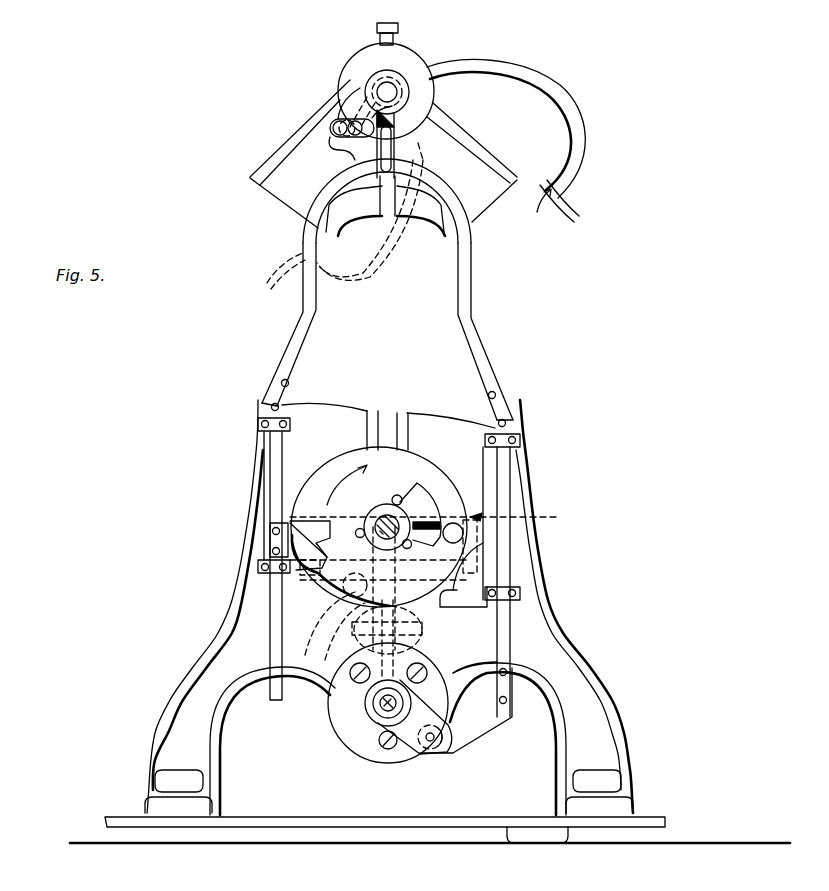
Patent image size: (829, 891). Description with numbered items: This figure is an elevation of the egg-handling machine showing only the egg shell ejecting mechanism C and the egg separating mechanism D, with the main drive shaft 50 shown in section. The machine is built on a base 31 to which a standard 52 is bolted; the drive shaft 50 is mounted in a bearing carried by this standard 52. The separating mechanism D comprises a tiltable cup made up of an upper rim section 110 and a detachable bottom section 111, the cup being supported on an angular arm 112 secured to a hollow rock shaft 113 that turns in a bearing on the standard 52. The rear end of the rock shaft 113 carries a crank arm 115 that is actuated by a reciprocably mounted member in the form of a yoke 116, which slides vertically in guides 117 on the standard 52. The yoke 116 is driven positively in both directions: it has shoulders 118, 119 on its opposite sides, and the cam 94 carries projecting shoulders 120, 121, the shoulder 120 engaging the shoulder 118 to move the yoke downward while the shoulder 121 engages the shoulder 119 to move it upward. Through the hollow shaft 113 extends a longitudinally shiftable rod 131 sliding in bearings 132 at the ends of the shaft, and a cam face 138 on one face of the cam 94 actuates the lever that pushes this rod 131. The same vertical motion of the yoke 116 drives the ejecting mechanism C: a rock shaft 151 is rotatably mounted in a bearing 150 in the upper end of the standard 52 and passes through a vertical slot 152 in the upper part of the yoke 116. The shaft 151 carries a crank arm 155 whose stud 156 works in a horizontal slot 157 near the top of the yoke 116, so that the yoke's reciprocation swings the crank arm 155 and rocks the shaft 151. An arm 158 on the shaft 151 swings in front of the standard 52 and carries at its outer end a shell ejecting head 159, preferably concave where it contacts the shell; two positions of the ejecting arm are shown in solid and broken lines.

The base 31 is at (655, 817).
The main drive shaft 50 is at (383, 521).
The standard 52 is at (277, 153).
The cam 94 is at (331, 460).
The rim section 110 is at (330, 553).
The bottom section 111 is at (345, 645).
The angular arm 112 is at (430, 655).
The hollow rock shaft 113 is at (382, 722).
The crank arm 115 is at (360, 738).
The yoke 116 is at (478, 365).
The guides 117 is at (277, 432).
The shoulder 118 is at (450, 606).
The shoulder 119 is at (326, 572).
The shoulder 120 is at (336, 615).
The shoulder 121 is at (460, 530).
The longitudinally shiftable member 131 is at (375, 707).
The bearings 132 is at (372, 700).
The cam face 138 is at (425, 510).
The bearing 150 is at (410, 93).
The rock shaft 151 is at (383, 90).
The vertical slot 152 is at (397, 117).
The crank arm 155 is at (362, 107).
The stud 156 is at (345, 137).
The horizontal slot 157 is at (332, 133).
The arm 158 is at (520, 72).
The shell ejecting head 159 is at (576, 214).
The egg shell ejecting mechanism C is at (539, 209).
The egg separating mechanism D is at (431, 577).